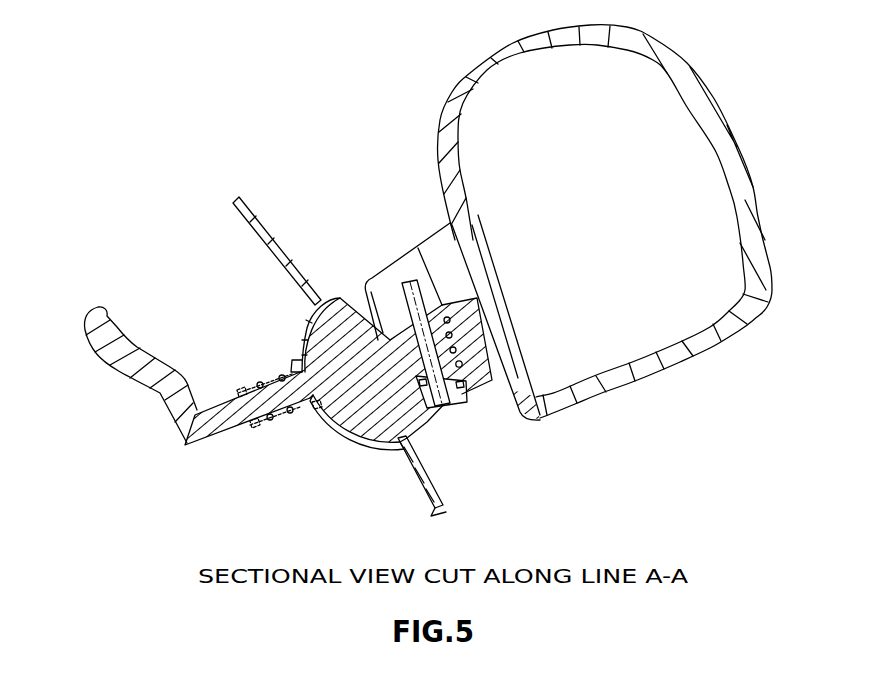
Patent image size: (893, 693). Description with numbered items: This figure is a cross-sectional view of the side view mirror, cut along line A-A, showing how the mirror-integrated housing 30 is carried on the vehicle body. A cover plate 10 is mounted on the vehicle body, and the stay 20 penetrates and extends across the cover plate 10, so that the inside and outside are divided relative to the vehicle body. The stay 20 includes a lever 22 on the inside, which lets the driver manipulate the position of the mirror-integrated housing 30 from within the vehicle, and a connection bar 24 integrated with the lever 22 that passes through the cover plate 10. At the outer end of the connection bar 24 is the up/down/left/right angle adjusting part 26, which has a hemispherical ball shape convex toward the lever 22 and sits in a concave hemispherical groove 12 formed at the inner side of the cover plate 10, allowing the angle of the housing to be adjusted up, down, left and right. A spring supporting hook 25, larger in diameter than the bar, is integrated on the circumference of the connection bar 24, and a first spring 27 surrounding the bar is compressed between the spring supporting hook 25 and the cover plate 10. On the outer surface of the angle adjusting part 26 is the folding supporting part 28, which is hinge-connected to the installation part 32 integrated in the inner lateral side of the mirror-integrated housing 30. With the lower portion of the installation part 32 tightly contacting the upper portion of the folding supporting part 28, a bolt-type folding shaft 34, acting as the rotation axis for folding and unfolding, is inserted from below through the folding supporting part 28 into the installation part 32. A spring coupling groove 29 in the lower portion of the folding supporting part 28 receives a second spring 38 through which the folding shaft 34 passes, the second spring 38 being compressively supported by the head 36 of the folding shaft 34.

The cover plate 10 is at (246, 205).
The concave hemispherical groove 12 is at (330, 398).
The stay 20 is at (214, 396).
The lever 22 is at (106, 348).
The connection bar 24 is at (220, 423).
The spring supporting hook 25 is at (253, 421).
The up/down/left/right angle adjusting part 26 is at (340, 297).
The first spring 27 is at (261, 382).
The folding supporting part 28 is at (491, 403).
The spring coupling groove 29 is at (390, 342).
The mirror-integrated housing 30 is at (680, 378).
The installation part 32 is at (430, 258).
The folding shaft 34 is at (424, 363).
The head 36 is at (440, 428).
The second spring 38 is at (462, 364).